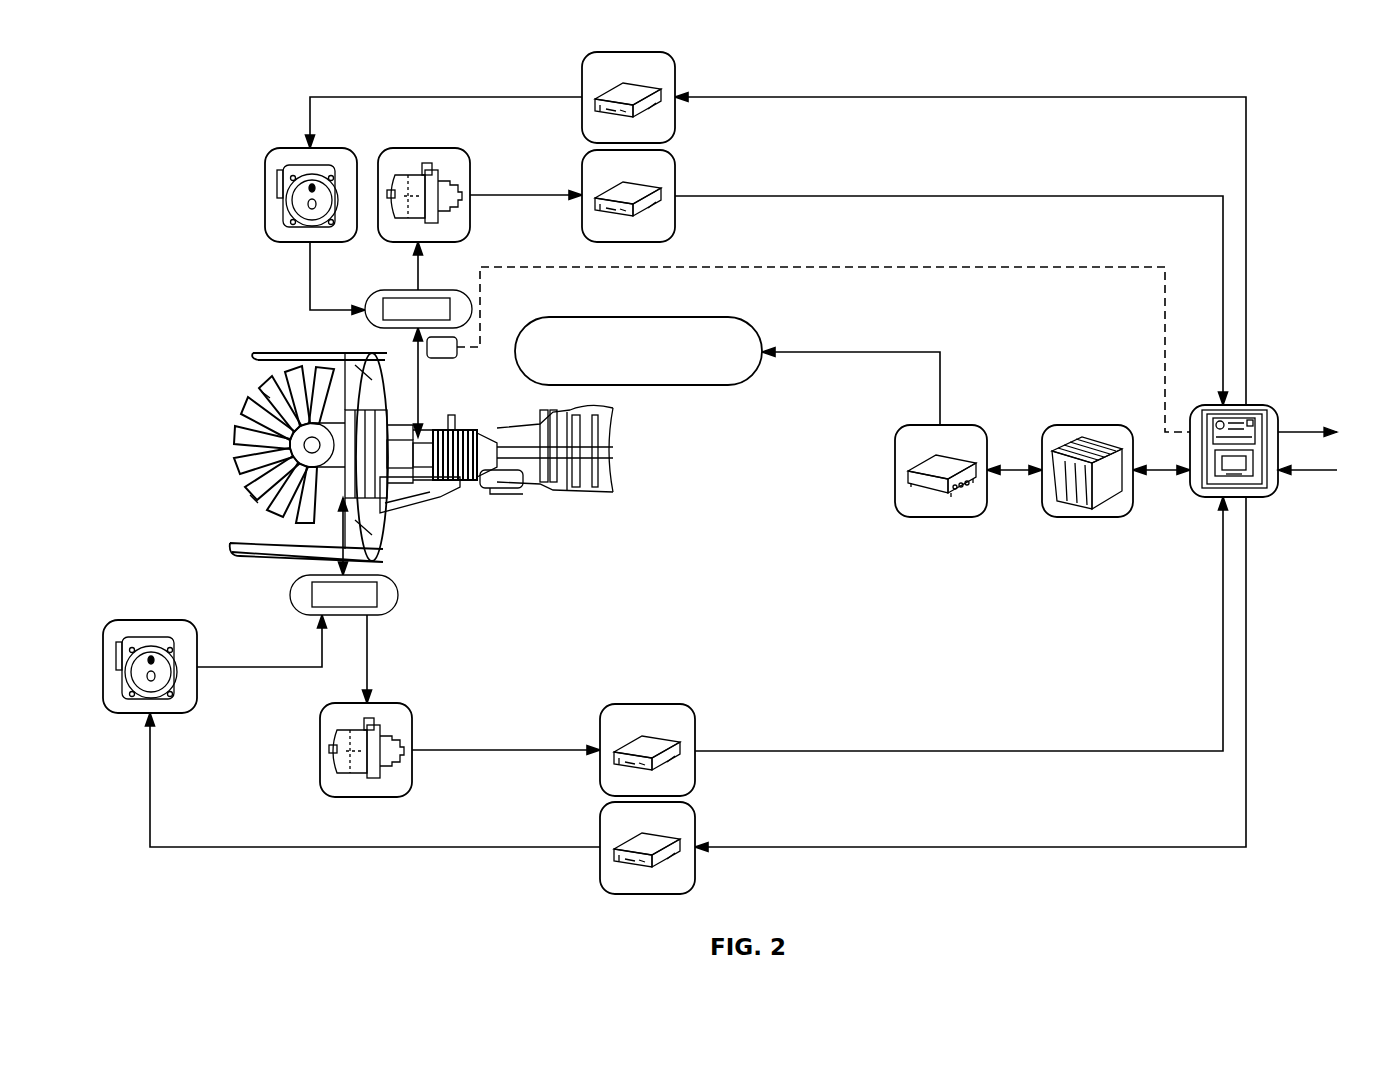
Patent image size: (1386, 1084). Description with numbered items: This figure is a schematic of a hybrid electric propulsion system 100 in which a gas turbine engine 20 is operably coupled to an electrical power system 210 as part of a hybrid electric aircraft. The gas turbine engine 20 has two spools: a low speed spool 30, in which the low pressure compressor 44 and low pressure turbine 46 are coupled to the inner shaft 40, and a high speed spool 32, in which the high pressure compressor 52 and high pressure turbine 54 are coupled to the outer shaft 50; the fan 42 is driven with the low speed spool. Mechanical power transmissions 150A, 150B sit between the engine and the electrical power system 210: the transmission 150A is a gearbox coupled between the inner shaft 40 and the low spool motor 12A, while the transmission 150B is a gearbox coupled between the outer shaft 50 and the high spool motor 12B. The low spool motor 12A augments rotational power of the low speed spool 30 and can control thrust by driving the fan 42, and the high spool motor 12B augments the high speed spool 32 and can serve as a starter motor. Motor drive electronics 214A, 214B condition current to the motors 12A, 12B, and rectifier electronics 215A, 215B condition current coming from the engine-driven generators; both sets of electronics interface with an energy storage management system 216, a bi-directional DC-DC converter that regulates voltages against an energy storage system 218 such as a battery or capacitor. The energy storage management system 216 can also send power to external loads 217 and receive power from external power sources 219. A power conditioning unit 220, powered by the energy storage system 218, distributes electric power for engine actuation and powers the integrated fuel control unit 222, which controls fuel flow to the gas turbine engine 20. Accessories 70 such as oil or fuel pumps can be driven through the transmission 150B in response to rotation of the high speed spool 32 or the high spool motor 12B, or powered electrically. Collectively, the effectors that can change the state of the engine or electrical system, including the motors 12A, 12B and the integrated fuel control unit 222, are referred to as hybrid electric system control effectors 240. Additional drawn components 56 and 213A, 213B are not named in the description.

The hybrid electric propulsion system 100 is at (92, 113).
The gas turbine engine 20 is at (224, 365).
The low speed spool 30 is at (392, 428).
The high speed spool 32 is at (503, 456).
The inner shaft 40 is at (300, 443).
The fan 42 is at (268, 500).
The low pressure compressor 44 is at (405, 520).
The low pressure turbine 46 is at (547, 482).
The outer shaft 50 is at (423, 437).
The high pressure compressor 52 is at (455, 480).
The high pressure turbine 54 is at (580, 484).
The low pressure turbine 56 is at (500, 480).
The accessories 70 is at (457, 355).
The low spool motor 12A is at (103, 668).
The high spool motor 12B is at (265, 190).
The mechanical power transmission 150A is at (398, 600).
The mechanical power transmission 150B is at (398, 292).
The electrical power system 210 is at (463, 260).
The first electric motor 213A is at (320, 750).
The second electric motor 213B is at (470, 150).
The motor drive electronics 214A is at (692, 803).
The motor drive electronics 214B is at (582, 85).
The rectifier electronics 215A is at (692, 705).
The rectifier electronics 215B is at (675, 173).
The energy storage management system 216 is at (1275, 496).
The external loads 217 is at (1310, 432).
The energy storage system 218 is at (1087, 517).
The external power sources 219 is at (1320, 470).
The power conditioning unit 220 is at (940, 517).
The integrated fuel control unit 222 is at (708, 385).
The hybrid electric system control effectors 240 is at (990, 236).